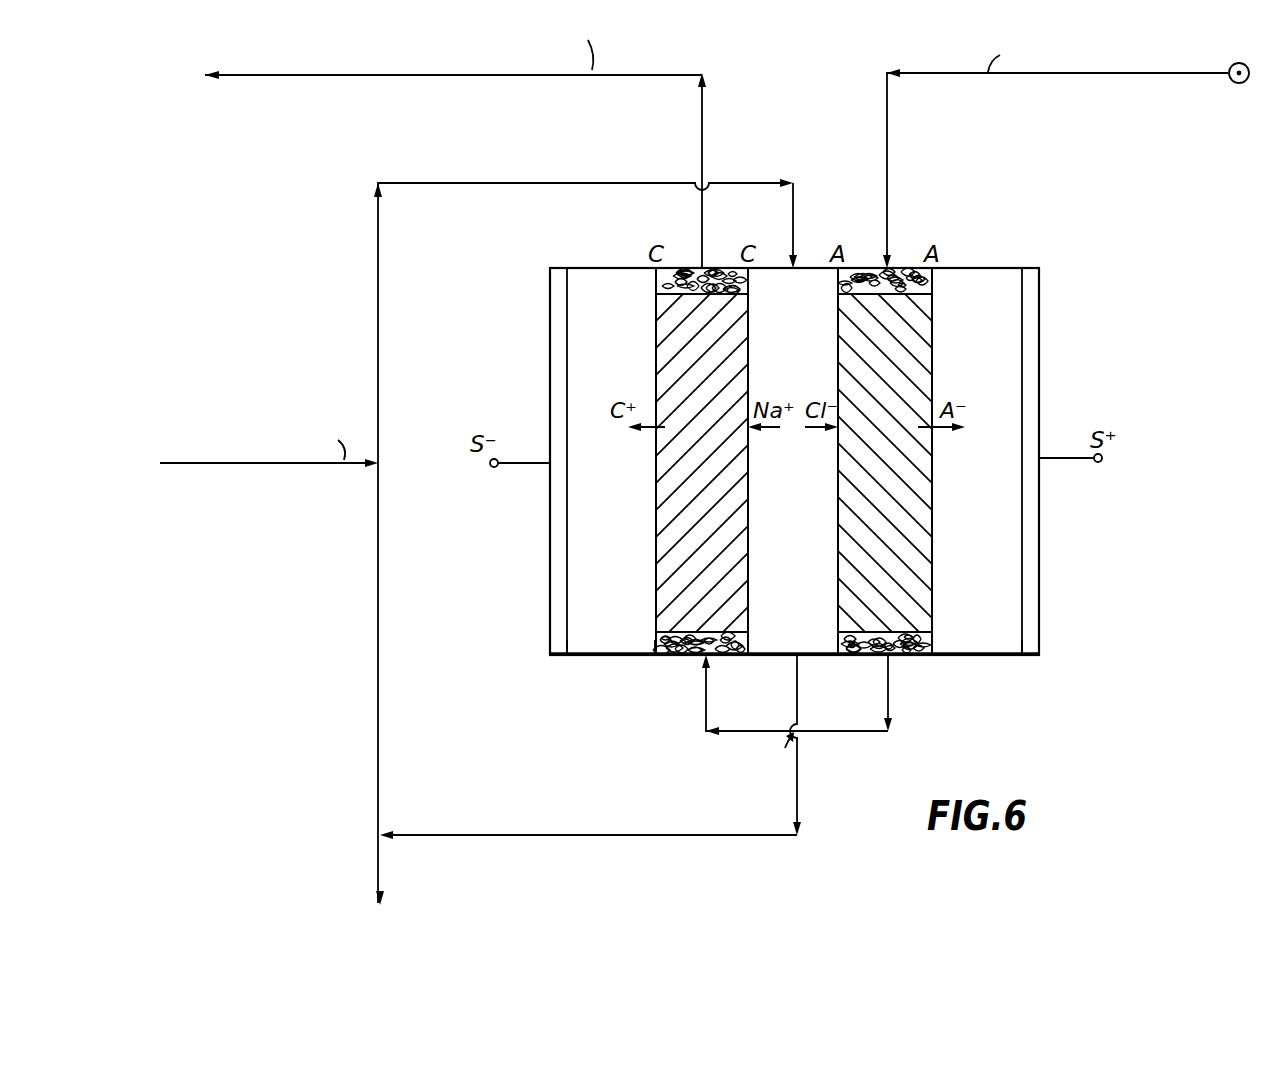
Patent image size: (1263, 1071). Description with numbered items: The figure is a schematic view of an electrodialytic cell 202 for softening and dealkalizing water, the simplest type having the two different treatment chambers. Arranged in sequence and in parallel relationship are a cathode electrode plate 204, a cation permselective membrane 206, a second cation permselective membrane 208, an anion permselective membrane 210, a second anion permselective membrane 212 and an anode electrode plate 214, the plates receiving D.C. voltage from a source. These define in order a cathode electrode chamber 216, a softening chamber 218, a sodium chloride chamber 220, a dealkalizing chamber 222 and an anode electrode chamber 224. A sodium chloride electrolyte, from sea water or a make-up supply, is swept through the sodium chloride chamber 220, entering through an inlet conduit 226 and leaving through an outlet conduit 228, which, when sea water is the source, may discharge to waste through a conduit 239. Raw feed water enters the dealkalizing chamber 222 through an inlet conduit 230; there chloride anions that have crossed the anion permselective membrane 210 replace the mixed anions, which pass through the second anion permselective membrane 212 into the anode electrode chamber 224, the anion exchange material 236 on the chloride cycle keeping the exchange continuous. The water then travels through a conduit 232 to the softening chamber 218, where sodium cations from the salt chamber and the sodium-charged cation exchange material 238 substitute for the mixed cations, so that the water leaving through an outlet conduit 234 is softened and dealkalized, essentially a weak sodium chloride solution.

The electrodialytic cell 202 is at (1090, 586).
The cathode electrode plate 204 is at (550, 598).
The cation permselective membrane 206 is at (656, 565).
The second cation permselective membrane 208 is at (748, 585).
The anion permselective membrane 210 is at (838, 535).
The second anion permselective membrane 212 is at (932, 552).
The anode electrode plate 214 is at (1039, 527).
The cathode electrode chamber 216 is at (602, 638).
The softening chamber 218 is at (736, 652).
The sodium chloride chamber 220 is at (814, 640).
The dealkalizing chamber 222 is at (918, 640).
The anode electrode chamber 224 is at (1003, 638).
The inlet conduit 226 is at (577, 182).
The outlet conduit 228 is at (800, 793).
The inlet conduit 230 is at (887, 135).
The conduit 232 is at (868, 732).
The outlet conduit 234 is at (690, 58).
The anion exchange material 236 is at (932, 345).
The cation exchange material 238 is at (656, 323).
The conduit 239 is at (378, 850).